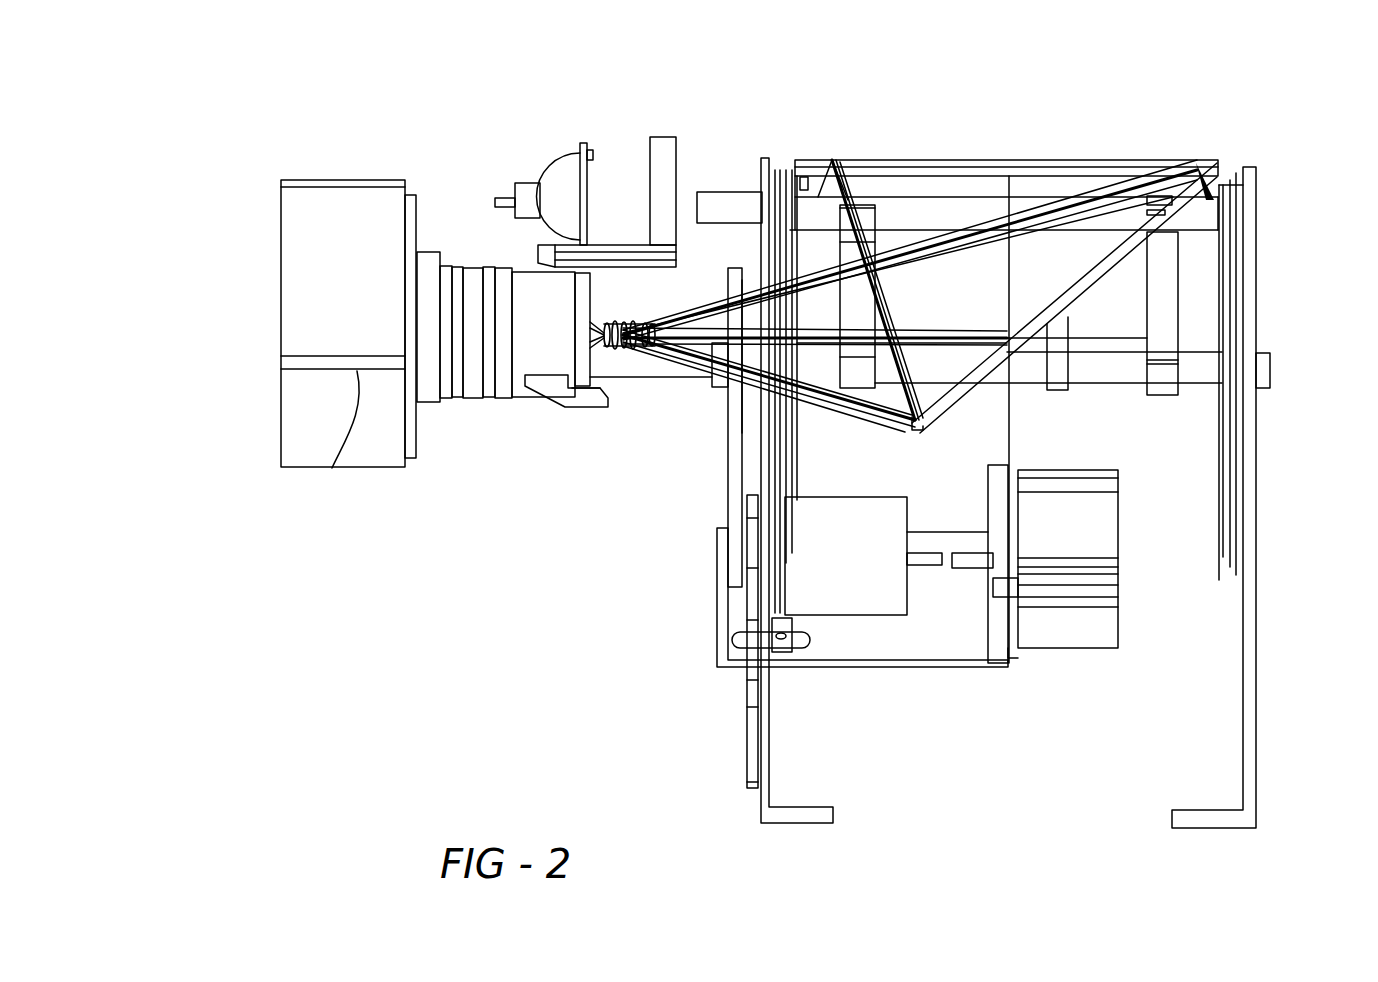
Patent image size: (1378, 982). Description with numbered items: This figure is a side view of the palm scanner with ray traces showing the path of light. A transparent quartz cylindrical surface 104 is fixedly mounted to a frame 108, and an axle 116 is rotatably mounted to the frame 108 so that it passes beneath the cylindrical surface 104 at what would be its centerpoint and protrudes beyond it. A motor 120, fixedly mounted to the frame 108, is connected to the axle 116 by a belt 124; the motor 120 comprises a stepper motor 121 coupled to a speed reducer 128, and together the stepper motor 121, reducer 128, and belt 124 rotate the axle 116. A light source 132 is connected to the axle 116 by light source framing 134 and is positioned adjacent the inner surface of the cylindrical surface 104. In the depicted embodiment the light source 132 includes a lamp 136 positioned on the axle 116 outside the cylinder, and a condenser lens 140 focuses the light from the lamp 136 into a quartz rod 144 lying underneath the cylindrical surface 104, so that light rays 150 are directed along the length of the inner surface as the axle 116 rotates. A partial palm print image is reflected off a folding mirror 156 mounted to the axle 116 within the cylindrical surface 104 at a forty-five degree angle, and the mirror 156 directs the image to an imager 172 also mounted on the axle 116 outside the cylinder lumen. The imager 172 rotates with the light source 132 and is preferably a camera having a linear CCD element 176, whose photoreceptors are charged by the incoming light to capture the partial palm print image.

The cylindrical surface 104 is at (892, 158).
The frame 108 is at (1256, 678).
The axle 116 is at (1272, 372).
The motor 120 is at (941, 650).
The stepper motor 121 is at (1070, 636).
The belt 124 is at (730, 478).
The speed reducer 128 is at (863, 598).
The light source 132 is at (670, 95).
The light source framing 134 is at (1172, 285).
The lamp 136 is at (548, 172).
The condenser lens 140 is at (648, 182).
The quartz rod 144 is at (712, 192).
The light rays 150 is at (688, 358).
The folding mirror 156 is at (1076, 285).
The imager 172 is at (268, 388).
The CCD element 176 is at (332, 468).